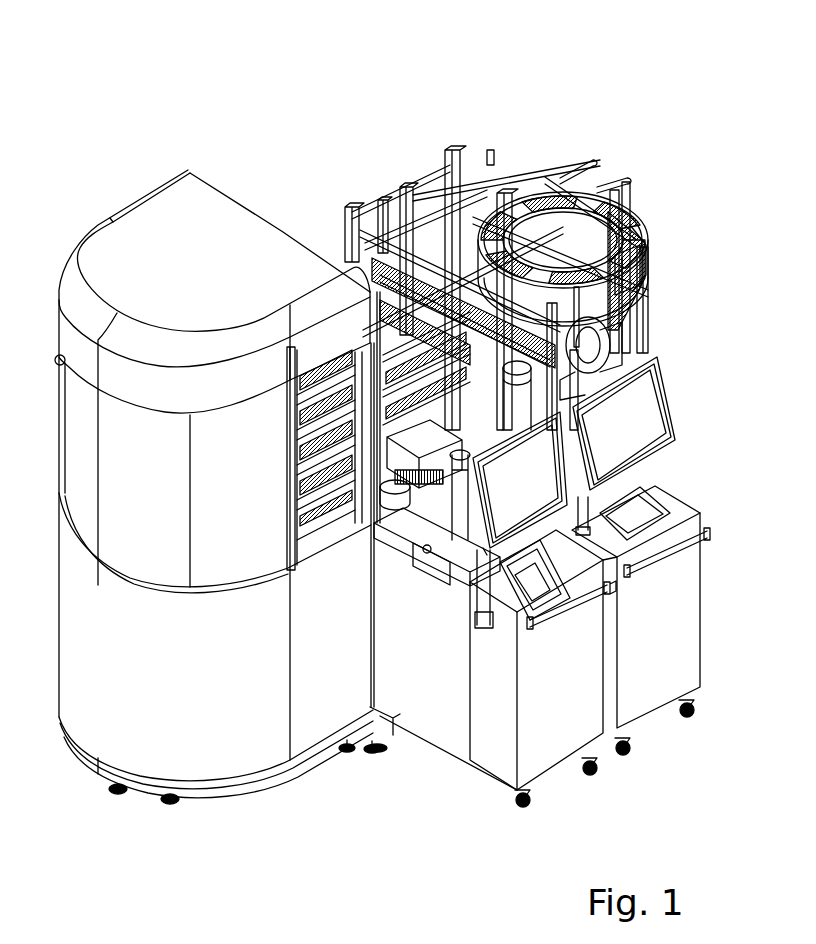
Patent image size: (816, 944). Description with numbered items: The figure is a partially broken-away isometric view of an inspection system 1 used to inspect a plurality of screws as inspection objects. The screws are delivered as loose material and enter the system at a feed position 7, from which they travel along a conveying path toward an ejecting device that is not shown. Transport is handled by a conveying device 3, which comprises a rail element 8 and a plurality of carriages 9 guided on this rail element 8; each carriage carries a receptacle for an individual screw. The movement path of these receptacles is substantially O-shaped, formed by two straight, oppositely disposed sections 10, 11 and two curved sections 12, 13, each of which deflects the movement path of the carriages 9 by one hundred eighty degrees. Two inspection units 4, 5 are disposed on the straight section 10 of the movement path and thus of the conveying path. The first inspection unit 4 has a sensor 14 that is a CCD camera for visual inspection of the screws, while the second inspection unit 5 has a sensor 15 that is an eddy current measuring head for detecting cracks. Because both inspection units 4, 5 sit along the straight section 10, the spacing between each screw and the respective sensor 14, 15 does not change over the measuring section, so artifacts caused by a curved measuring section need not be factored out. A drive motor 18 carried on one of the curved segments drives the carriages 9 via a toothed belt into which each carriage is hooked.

The inspection system 1 is at (637, 128).
The conveying device 3 is at (452, 133).
The first inspection unit 4 is at (660, 650).
The second inspection unit 5 is at (443, 703).
The feed position 7 is at (607, 173).
The rail element 8 is at (352, 220).
The carriages 9 is at (627, 260).
The straight section 10 is at (597, 350).
The straight section 11 is at (333, 242).
The curved section 12 is at (660, 248).
The curved section 13 is at (85, 563).
The sensor 14 is at (673, 440).
The sensor 15 is at (410, 547).
The drive motor 18 is at (533, 180).